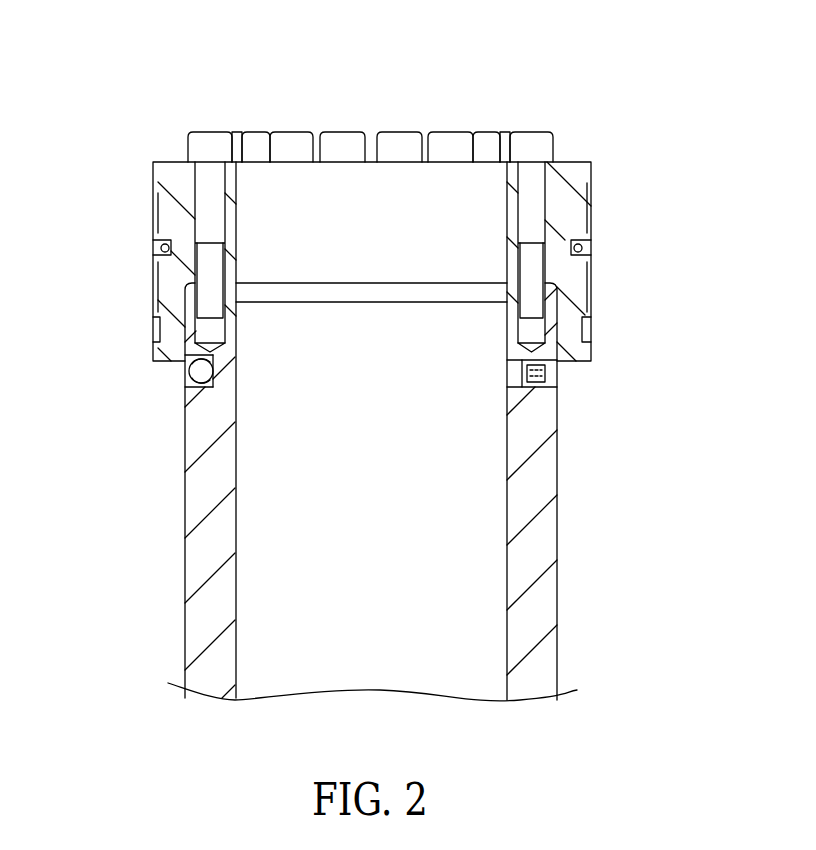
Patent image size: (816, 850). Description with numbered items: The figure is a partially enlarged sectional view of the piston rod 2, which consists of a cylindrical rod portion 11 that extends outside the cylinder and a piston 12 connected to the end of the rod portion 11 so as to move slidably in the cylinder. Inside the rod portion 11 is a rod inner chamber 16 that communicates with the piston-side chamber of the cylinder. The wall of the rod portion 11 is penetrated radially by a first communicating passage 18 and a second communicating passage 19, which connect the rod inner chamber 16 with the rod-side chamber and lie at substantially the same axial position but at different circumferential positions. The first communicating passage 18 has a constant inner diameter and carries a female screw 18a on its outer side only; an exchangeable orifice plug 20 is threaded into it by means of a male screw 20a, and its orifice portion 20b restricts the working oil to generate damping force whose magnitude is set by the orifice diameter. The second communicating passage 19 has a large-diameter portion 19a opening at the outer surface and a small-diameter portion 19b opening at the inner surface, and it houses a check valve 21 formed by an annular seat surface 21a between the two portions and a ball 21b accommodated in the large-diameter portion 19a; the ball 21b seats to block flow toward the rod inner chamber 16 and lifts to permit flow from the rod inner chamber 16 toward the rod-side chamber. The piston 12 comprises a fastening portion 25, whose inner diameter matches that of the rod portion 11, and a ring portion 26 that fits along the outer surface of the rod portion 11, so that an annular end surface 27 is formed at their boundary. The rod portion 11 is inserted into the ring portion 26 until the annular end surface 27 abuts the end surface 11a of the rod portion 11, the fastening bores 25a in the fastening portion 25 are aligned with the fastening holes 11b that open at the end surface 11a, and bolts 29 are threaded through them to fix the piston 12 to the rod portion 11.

The piston rod 2 is at (449, 94).
The rod portion 11 is at (535, 623).
The end surface 11a is at (552, 286).
The fastening holes 11b is at (517, 338).
The piston 12 is at (581, 153).
The rod inner chamber 16 is at (457, 552).
The first communicating passage 18 is at (517, 378).
The female screw 18a is at (542, 382).
The second communicating passage 19 is at (305, 342).
The large-diameter portion 19a is at (210, 378).
The small-diameter portion 19b is at (212, 373).
The orifice plug 20 is at (548, 398).
The male screw 20a is at (543, 350).
The orifice portion 20b is at (548, 367).
The check valve 21 is at (193, 393).
The seat surface 21a is at (187, 368).
The ball 21b is at (185, 377).
The fastening portion 25 is at (567, 212).
The fastening bores 25a is at (522, 177).
The ring portion 26 is at (567, 322).
The annular end surface 27 is at (507, 293).
The bolts 29 is at (533, 188).